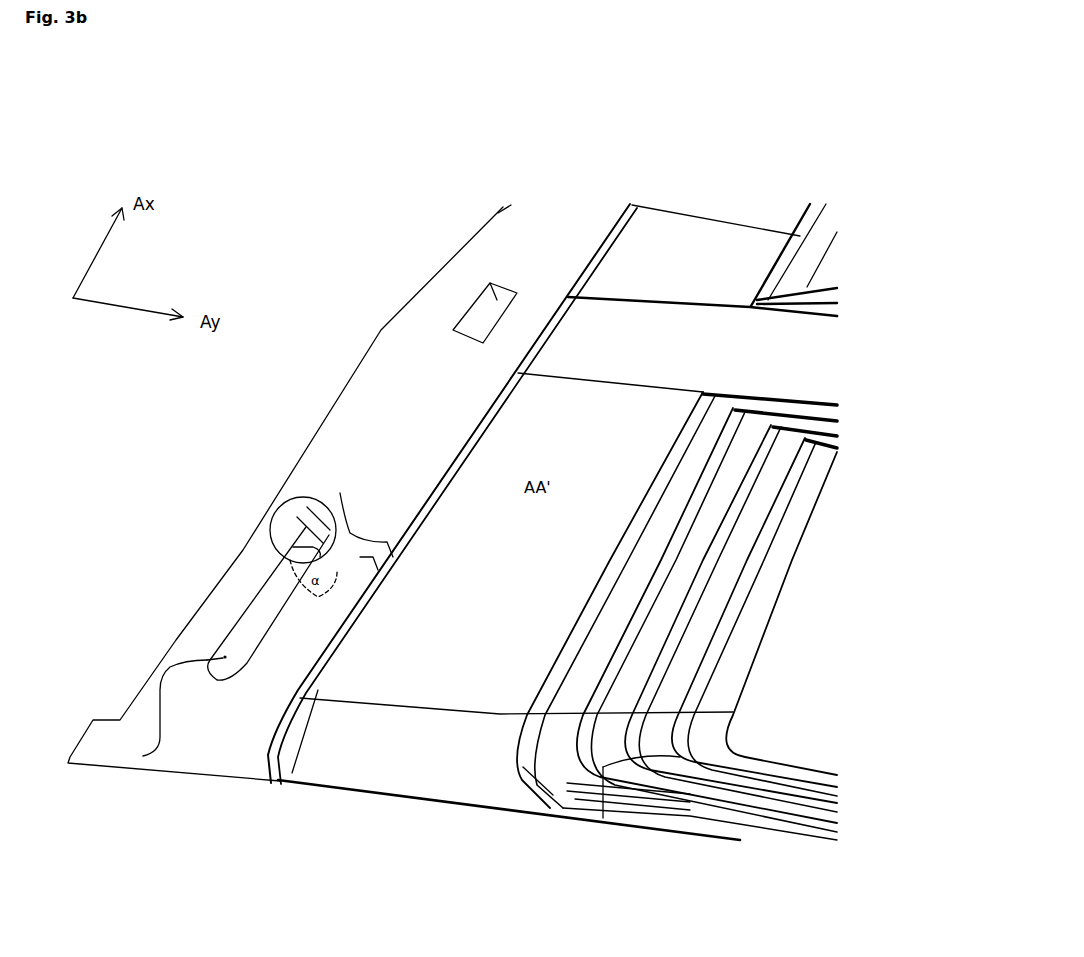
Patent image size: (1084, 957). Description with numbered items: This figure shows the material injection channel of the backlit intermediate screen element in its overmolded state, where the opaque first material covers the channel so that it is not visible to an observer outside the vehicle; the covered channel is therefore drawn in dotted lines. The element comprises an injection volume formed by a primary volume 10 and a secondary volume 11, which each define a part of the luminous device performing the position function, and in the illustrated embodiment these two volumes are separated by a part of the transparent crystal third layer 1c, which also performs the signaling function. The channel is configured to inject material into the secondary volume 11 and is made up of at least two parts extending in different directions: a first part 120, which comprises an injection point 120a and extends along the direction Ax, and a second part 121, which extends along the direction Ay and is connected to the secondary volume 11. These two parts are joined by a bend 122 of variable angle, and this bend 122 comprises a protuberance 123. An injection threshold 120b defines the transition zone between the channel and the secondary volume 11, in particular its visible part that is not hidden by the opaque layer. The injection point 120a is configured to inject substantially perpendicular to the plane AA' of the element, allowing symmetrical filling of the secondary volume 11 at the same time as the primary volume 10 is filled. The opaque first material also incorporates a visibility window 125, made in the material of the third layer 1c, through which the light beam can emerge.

The secondary volume 11 is at (412, 337).
The third layer 1c is at (617, 332).
The primary volume 10 is at (603, 818).
The visibility window 125 is at (485, 280).
The second part 121 is at (343, 523).
The protuberance 123 is at (297, 497).
The bend 122 is at (277, 533).
The first part 120 is at (253, 607).
The injection point 120a is at (147, 709).
The injection threshold 120b is at (390, 570).